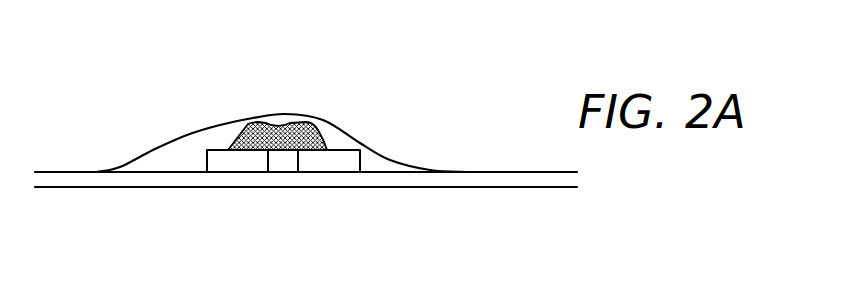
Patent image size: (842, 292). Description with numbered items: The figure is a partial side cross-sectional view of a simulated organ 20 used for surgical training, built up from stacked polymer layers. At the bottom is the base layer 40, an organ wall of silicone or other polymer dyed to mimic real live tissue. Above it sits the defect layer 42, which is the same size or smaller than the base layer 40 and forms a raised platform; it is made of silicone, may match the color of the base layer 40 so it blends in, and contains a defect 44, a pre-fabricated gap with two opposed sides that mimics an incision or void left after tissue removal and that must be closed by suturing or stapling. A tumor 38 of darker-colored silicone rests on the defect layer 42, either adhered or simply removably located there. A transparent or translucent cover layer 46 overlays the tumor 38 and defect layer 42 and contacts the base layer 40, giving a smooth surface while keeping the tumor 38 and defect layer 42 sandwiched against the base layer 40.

The simulated organ 20 is at (211, 101).
The tumor 38 is at (320, 123).
The base layer 40 is at (453, 180).
The defect layer 42 is at (332, 162).
The defect 44 is at (282, 165).
The cover layer 46 is at (360, 140).